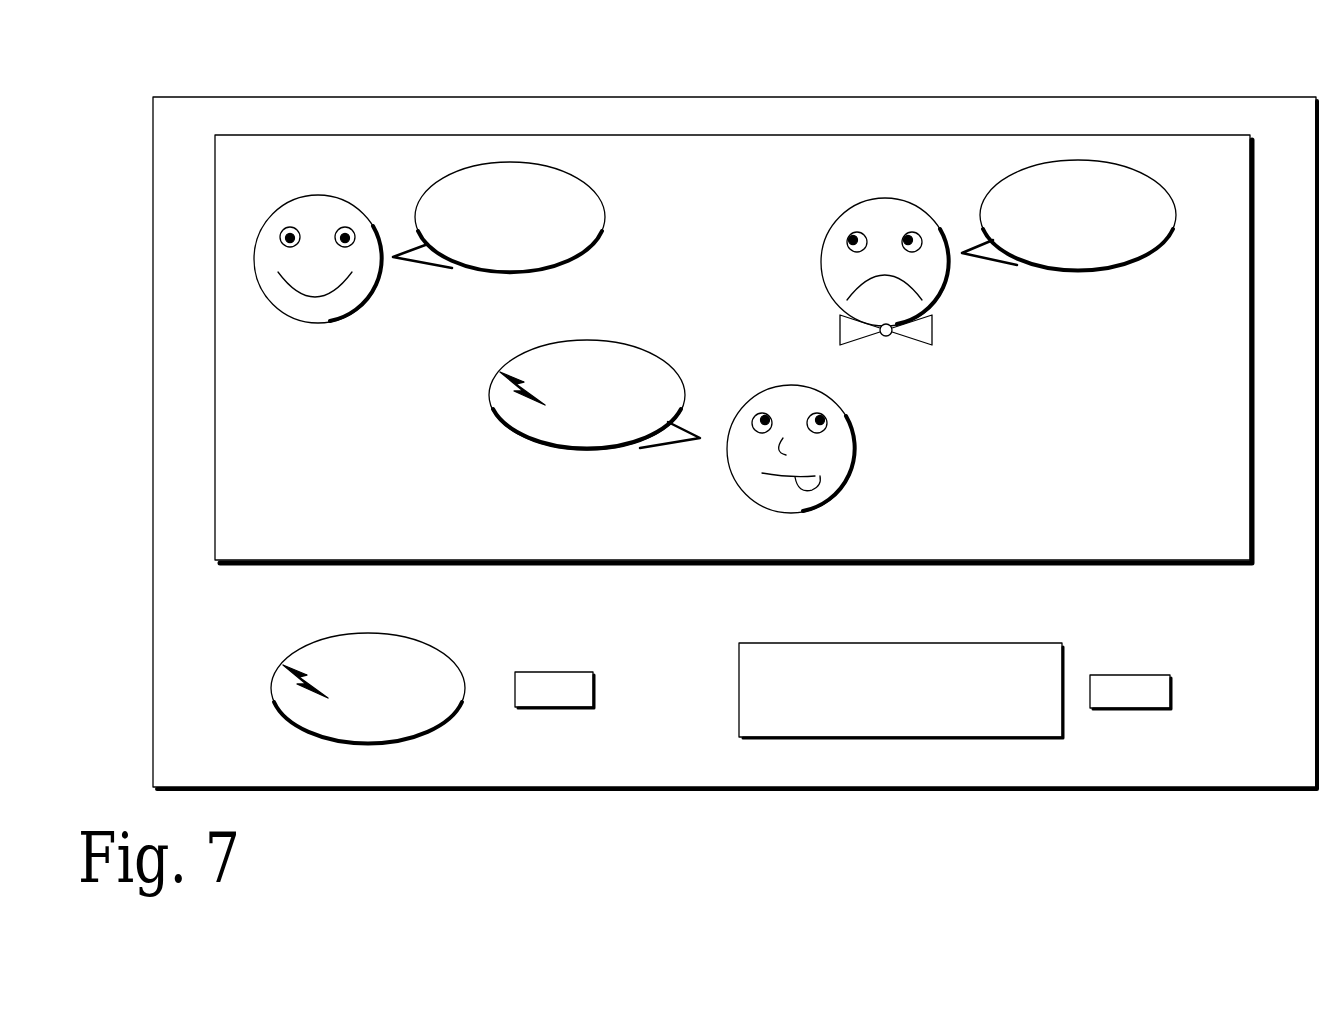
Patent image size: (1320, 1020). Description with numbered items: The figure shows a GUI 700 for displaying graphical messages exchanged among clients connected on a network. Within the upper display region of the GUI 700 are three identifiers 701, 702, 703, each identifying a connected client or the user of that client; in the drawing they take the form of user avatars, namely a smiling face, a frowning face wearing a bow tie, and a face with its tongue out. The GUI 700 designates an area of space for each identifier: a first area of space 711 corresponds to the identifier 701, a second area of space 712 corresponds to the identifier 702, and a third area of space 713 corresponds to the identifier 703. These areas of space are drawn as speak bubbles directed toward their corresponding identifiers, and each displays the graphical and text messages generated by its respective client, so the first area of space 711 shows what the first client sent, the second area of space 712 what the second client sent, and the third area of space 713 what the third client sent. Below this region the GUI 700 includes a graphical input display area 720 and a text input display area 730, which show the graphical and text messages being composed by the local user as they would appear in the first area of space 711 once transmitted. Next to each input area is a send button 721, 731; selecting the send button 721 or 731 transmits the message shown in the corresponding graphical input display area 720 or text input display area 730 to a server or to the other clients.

The GUI 700 is at (1138, 80).
The identifier 701 is at (306, 199).
The identifier 702 is at (832, 222).
The identifier 703 is at (850, 452).
The first area of space 711 is at (597, 199).
The second area of space 712 is at (1196, 193).
The third area of space 713 is at (508, 363).
The graphical input display area 720 is at (432, 651).
The send button 721 is at (583, 669).
The text input display area 730 is at (1012, 642).
The send button 731 is at (1165, 673).